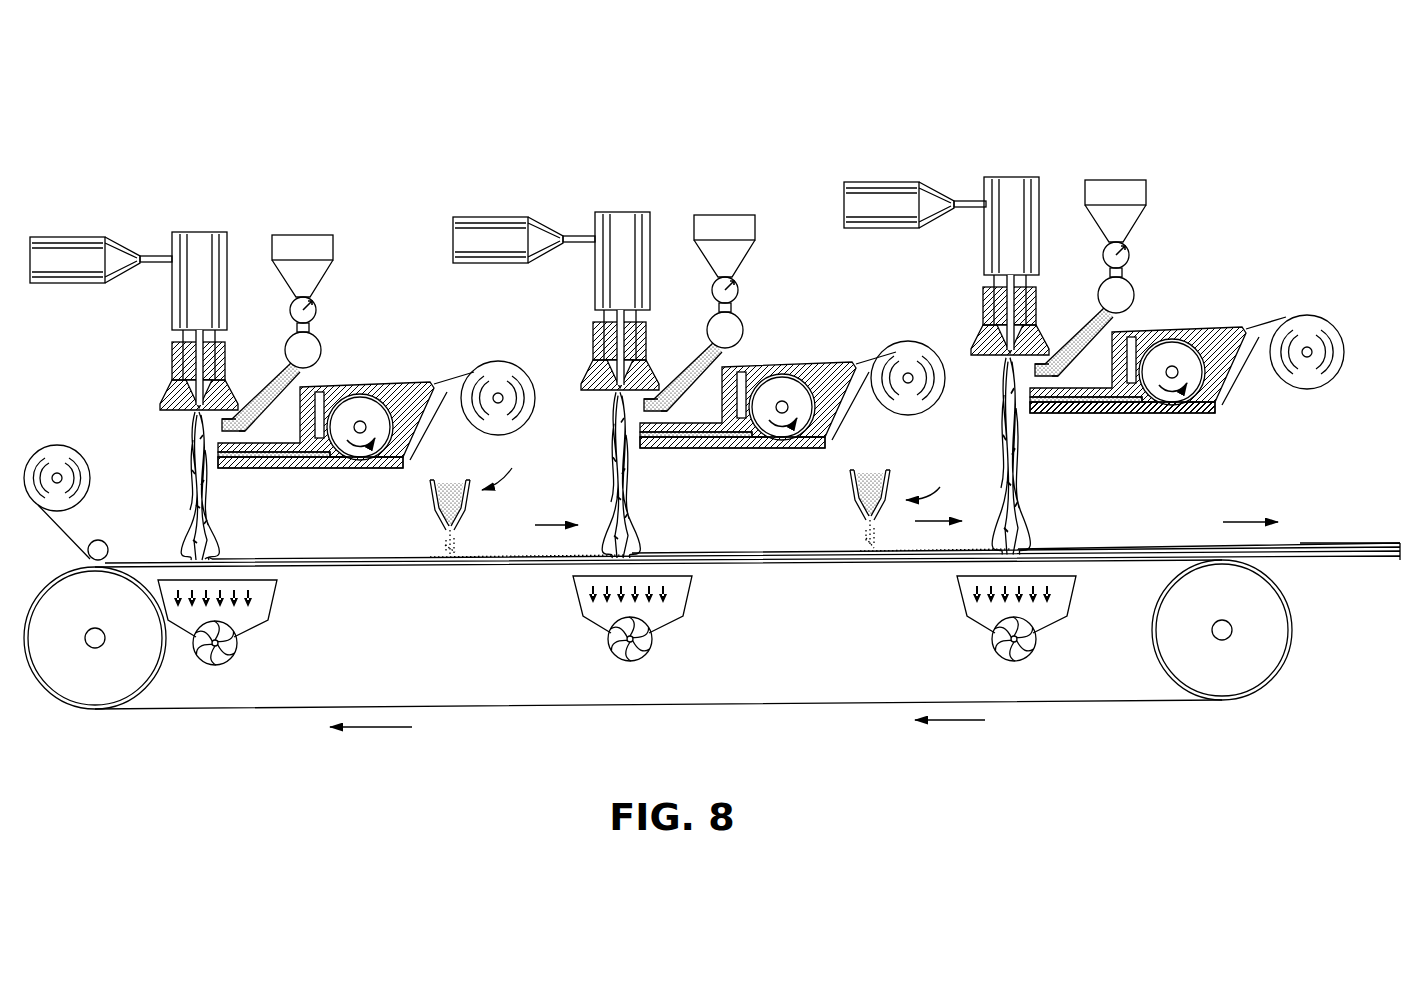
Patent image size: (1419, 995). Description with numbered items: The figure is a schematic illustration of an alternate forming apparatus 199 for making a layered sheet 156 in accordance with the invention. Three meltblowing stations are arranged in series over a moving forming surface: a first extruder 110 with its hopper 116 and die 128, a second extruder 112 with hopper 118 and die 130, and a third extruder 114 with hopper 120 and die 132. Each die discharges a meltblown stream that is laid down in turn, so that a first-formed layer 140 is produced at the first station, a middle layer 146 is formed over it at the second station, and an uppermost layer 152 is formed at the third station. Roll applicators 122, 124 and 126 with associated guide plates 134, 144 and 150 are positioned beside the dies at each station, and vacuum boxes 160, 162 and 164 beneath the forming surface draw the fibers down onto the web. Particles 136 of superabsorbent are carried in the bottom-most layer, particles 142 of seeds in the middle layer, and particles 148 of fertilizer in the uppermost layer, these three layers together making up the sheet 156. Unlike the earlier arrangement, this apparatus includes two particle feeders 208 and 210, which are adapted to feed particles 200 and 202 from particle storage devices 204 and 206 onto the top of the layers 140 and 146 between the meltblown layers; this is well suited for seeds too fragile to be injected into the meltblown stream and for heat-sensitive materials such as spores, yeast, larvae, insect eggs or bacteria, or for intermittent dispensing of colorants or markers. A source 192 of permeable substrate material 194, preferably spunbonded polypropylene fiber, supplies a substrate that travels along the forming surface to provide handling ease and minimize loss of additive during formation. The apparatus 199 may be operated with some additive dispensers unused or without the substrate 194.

The apparatus 199 is at (452, 118).
The first extruder 110 is at (189, 208).
The second extruder 112 is at (610, 194).
The third extruder 114 is at (997, 158).
The first hopper 116 is at (297, 240).
The second hopper 118 is at (720, 228).
The third hopper 120 is at (1110, 188).
The first roll applicator 122 is at (366, 386).
The second roll applicator 124 is at (790, 365).
The third roll applicator 126 is at (1180, 332).
The first die 128 is at (190, 415).
The second die 130 is at (612, 396).
The third die 132 is at (1000, 372).
The first guide plate 134 is at (215, 468).
The second guide plate 144 is at (642, 446).
The third guide plate 150 is at (1030, 416).
The particles 136 is at (197, 428).
The particles 142 is at (625, 410).
The particles 148 is at (1002, 395).
The first-formed layer 140 is at (305, 560).
The middle layer 146 is at (756, 552).
The uppermost layer 152 is at (1145, 542).
The sheet 156 is at (1308, 518).
The first vacuum box 160 is at (280, 598).
The second vacuum box 162 is at (573, 590).
The third vacuum box 164 is at (957, 590).
The source of permeable substrate material 192 is at (52, 455).
The permeable substrate 194 is at (57, 513).
The particles 200 is at (456, 542).
The particles 202 is at (870, 544).
The particle storage device 204 is at (430, 488).
The particle storage device 206 is at (850, 478).
The particle feeder 208 is at (509, 466).
The particle feeder 210 is at (935, 480).